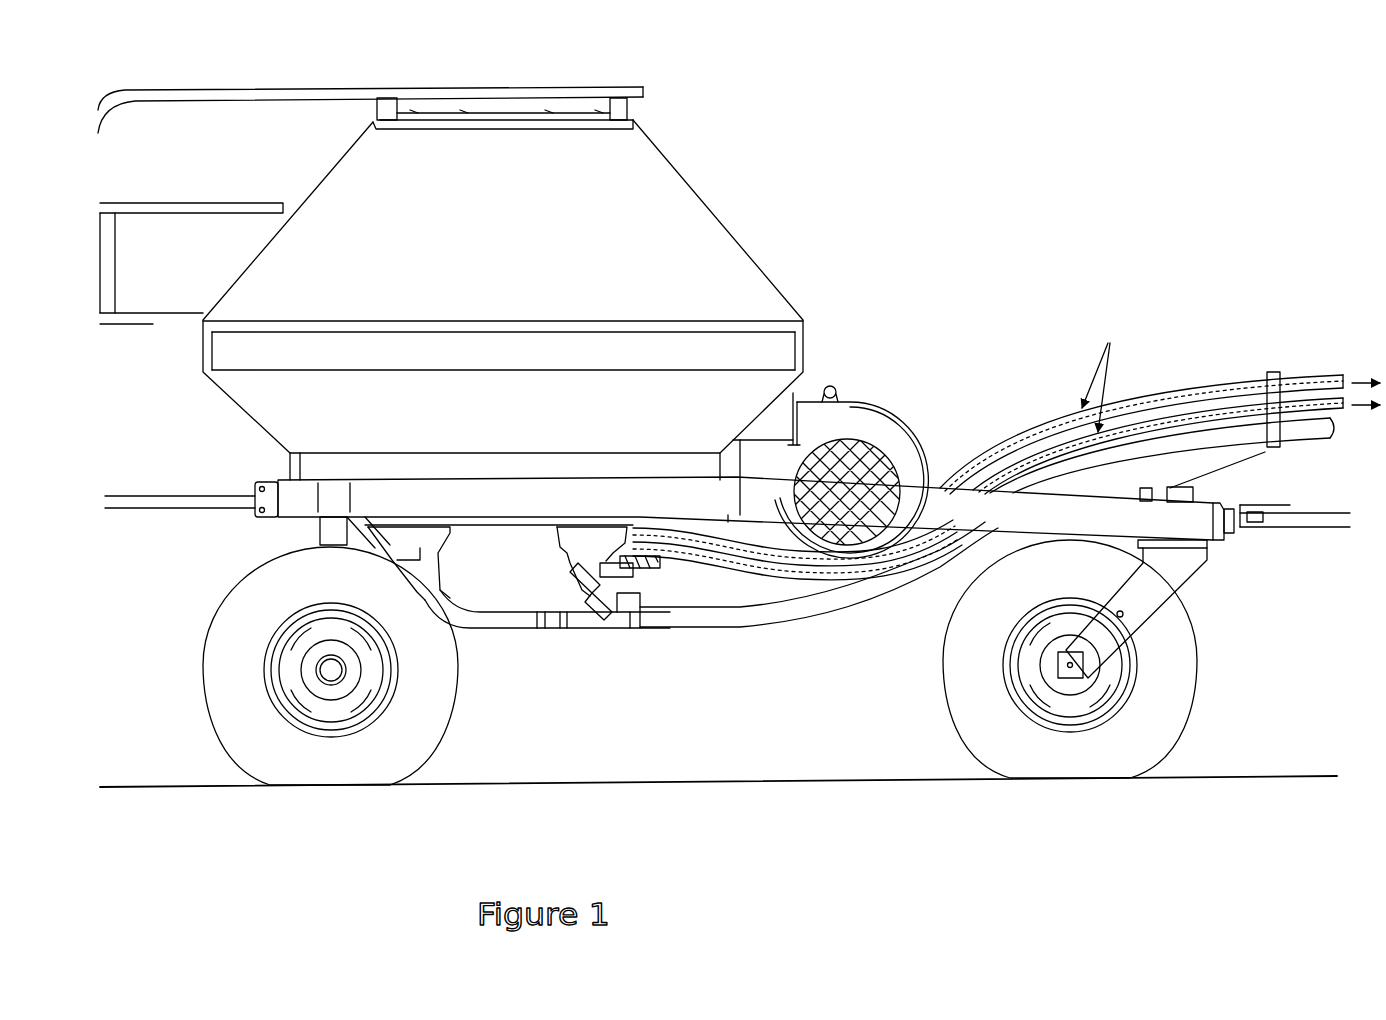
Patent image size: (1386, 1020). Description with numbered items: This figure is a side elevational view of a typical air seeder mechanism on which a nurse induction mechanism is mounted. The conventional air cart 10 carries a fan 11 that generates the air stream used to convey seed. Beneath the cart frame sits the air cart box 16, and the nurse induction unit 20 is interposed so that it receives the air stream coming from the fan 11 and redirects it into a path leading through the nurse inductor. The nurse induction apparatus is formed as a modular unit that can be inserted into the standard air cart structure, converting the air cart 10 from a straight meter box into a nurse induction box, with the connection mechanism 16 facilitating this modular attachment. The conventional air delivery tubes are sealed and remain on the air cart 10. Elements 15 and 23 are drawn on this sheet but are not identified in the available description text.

The air cart 10 is at (752, 180).
The fan 11 is at (880, 406).
The metering housing 15 is at (450, 540).
The air cart box 16 is at (562, 545).
The nurse induction unit 20 is at (638, 568).
The air conduit 23 is at (840, 609).